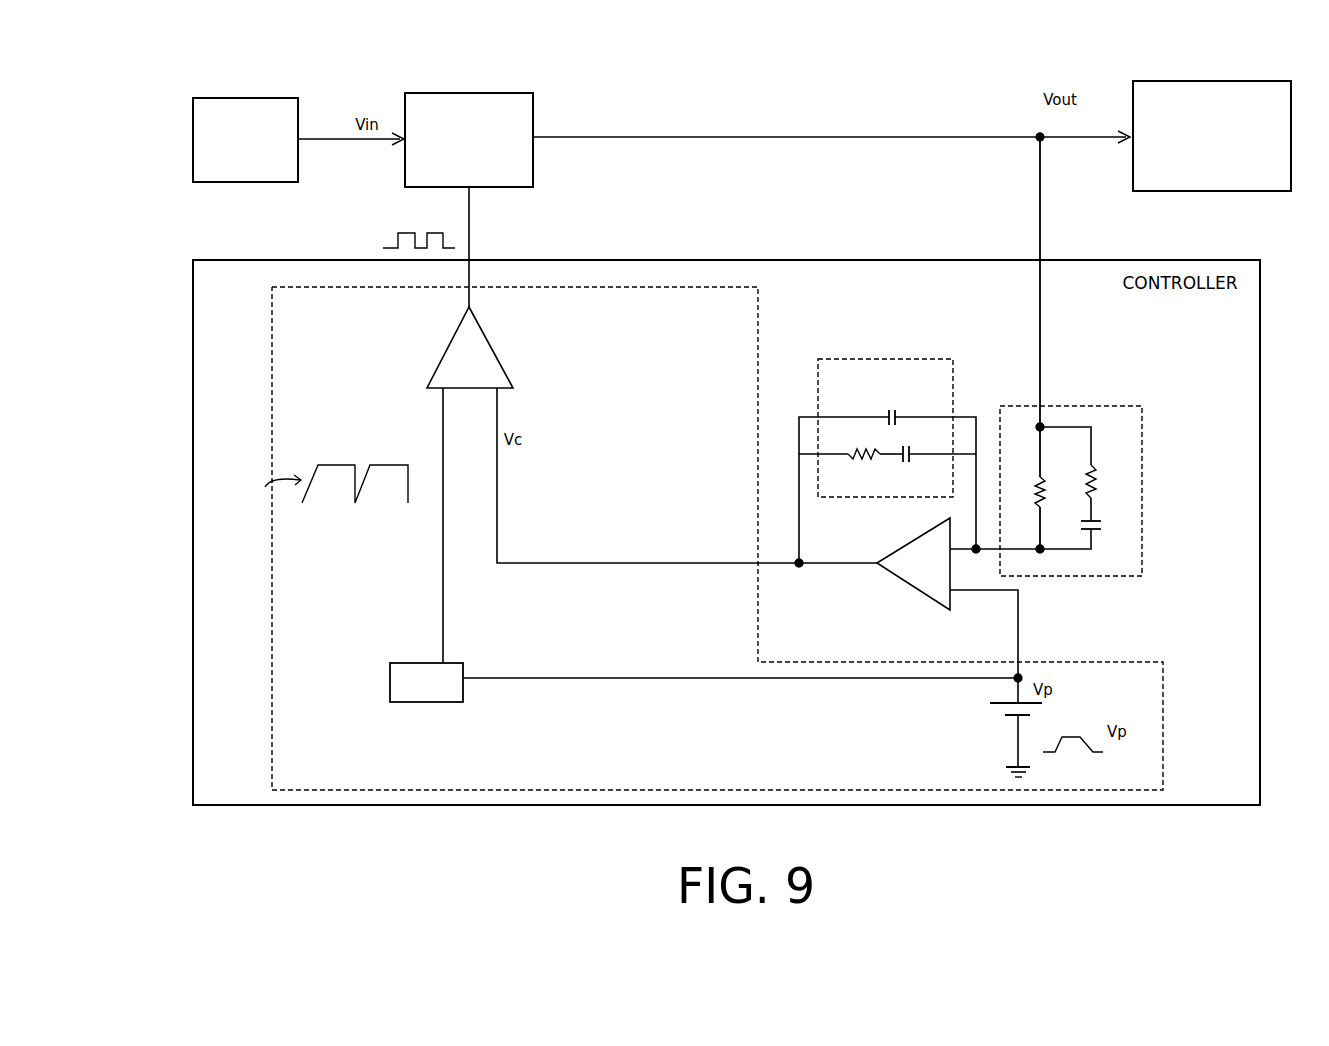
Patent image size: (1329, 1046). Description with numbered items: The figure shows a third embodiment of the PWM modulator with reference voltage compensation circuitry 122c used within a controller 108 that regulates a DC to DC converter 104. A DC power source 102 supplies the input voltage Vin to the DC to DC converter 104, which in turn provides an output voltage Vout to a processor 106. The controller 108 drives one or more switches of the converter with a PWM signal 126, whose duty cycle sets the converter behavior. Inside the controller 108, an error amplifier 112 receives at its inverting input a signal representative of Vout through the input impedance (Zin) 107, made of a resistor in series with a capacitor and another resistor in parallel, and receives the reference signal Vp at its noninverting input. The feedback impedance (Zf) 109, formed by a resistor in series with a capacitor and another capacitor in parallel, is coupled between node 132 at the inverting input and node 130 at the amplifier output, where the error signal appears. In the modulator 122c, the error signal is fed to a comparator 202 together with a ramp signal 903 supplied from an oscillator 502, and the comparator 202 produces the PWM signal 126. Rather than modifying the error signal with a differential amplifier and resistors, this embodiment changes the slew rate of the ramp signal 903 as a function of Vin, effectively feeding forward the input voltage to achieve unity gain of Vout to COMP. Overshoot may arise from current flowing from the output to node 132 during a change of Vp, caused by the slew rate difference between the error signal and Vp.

The DC power source 102 is at (243, 98).
The DC to DC converter 104 is at (420, 93).
The processor 106 is at (1178, 81).
The PWM signal 126 is at (384, 247).
The PWM modulator with reference voltage compensation circuitry 122c is at (270, 448).
The comparator 202 is at (437, 360).
The ramp signal 903 is at (340, 465).
The oscillator 502 is at (390, 680).
The feedback impedance (Zf) 109 is at (865, 359).
The input impedance (Zin) 107 is at (1124, 457).
The controller 108 is at (1127, 412).
The node 130 is at (800, 565).
The error amplifier 112 is at (890, 577).
The node 132 is at (973, 553).